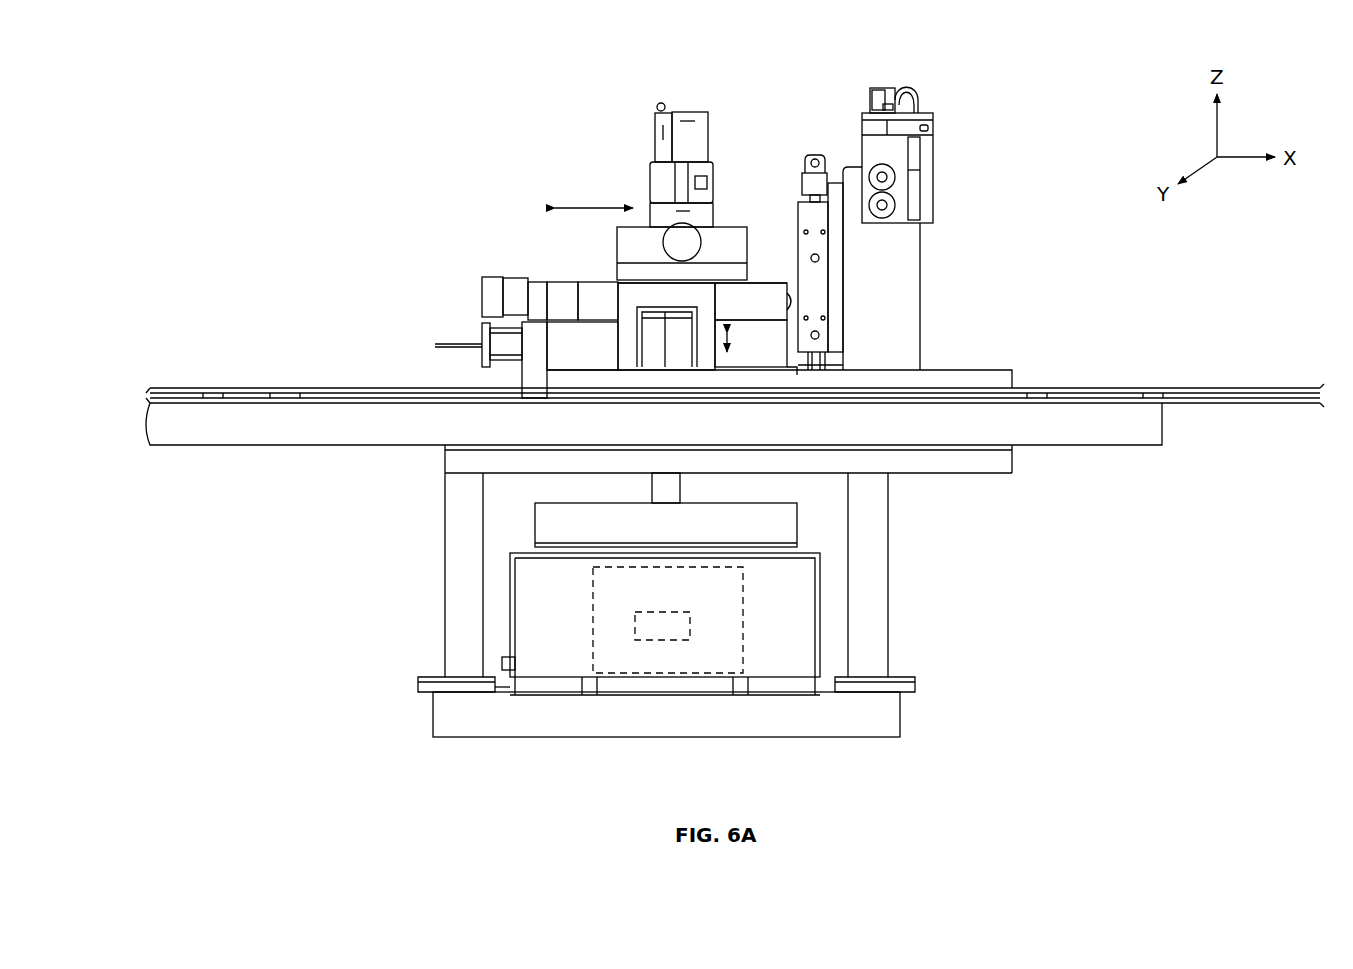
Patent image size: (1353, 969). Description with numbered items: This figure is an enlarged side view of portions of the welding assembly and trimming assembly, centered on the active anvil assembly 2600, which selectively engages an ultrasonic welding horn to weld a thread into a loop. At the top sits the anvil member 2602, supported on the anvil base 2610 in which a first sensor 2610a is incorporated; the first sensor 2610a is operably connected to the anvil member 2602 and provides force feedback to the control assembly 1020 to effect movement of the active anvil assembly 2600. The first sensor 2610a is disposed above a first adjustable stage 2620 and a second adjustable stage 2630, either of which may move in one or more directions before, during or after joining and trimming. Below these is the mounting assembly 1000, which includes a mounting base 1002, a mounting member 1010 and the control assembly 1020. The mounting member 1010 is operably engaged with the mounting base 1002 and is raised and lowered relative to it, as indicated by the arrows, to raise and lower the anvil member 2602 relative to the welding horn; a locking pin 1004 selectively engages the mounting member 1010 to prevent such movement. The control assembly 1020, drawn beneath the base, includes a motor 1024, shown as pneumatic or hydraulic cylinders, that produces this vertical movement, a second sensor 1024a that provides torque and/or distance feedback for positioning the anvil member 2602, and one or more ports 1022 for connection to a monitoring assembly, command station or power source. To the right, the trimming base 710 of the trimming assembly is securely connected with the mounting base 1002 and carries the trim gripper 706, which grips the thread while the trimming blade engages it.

The active anvil assembly 2600 is at (292, 94).
The anvil member 2602 is at (630, 128).
The anvil base 2610 is at (650, 190).
The first sensor 2610a is at (707, 184).
The first adjustable stage 2620 is at (740, 238).
The second adjustable stage 2630 is at (563, 290).
The mounting assembly 1000 is at (408, 352).
The locking pin 1004 is at (480, 340).
The mounting member 1010 is at (560, 346).
The mounting base 1002 is at (968, 376).
The trim gripper 706 is at (945, 103).
The trimming base 710 is at (920, 262).
The control assembly 1020 is at (822, 612).
The ports 1022 is at (500, 660).
The motor 1024 is at (668, 620).
The second sensor 1024a is at (662, 640).